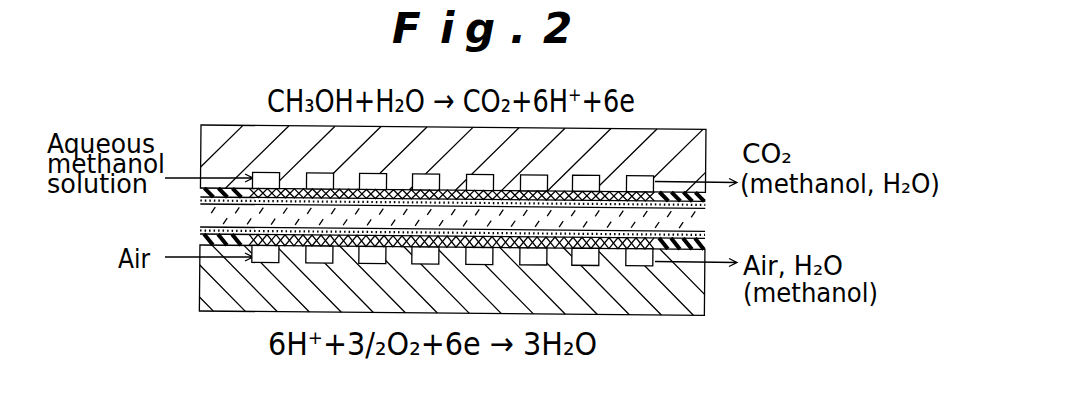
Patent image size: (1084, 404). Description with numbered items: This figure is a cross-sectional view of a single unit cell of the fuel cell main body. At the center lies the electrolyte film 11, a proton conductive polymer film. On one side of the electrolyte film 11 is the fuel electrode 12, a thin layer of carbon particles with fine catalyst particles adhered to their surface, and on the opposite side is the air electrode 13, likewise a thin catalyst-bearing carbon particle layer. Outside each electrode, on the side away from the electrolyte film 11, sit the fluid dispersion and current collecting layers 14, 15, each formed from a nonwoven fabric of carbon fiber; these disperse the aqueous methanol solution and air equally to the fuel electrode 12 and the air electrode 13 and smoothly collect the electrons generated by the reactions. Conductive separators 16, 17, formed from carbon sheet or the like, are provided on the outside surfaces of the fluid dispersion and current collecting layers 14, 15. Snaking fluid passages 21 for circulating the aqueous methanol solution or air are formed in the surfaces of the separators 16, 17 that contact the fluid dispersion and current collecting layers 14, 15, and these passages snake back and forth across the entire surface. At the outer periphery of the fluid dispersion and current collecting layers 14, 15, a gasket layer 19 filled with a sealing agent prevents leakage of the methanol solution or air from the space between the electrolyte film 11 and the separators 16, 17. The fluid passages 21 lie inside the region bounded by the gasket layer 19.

The electrolyte film 11 is at (677, 215).
The fuel electrode 12 is at (300, 185).
The air electrode 13 is at (297, 237).
The fluid dispersion and current collecting layer 14 is at (645, 188).
The fluid dispersion and current collecting layer 15 is at (660, 283).
The separator 16 is at (227, 143).
The separator 17 is at (215, 287).
The gasket layer 19 is at (200, 242).
The fluid passages 21 is at (252, 190).